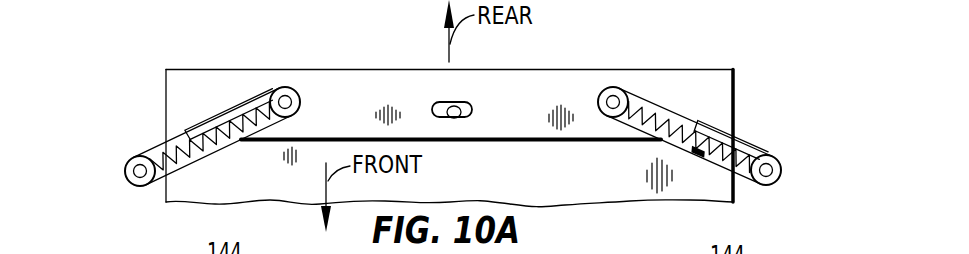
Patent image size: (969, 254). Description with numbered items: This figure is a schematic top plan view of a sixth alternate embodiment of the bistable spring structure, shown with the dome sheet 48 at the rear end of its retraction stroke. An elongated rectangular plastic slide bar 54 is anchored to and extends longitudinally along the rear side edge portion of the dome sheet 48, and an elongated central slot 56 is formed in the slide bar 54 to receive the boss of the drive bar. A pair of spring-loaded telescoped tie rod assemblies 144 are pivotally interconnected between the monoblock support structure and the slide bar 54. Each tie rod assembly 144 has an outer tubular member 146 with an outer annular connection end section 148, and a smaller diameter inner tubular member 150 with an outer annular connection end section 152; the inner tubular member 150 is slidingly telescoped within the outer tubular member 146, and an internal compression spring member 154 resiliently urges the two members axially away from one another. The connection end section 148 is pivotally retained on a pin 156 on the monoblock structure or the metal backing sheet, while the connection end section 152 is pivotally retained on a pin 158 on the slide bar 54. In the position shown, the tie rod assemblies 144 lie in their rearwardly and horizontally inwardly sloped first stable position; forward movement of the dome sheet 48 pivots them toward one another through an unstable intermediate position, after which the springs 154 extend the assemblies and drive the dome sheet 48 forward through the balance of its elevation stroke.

The dome sheet 48 is at (483, 188).
The slide bar 54 is at (538, 68).
The central slot 56 is at (459, 116).
The tie rod assembly 144 is at (456, 113).
The outer tubular member 146 is at (181, 129).
The outer annular connection end section 148 is at (128, 157).
The inner tubular member 150 is at (247, 103).
The outer annular connection end section 152 is at (300, 106).
The compression spring member 154 is at (190, 160).
The pin 156 is at (133, 173).
The pin 158 is at (300, 100).